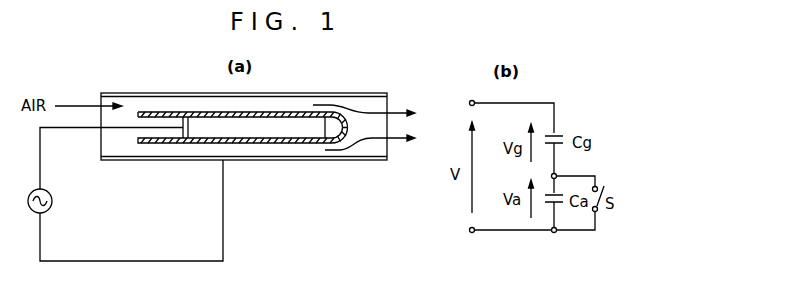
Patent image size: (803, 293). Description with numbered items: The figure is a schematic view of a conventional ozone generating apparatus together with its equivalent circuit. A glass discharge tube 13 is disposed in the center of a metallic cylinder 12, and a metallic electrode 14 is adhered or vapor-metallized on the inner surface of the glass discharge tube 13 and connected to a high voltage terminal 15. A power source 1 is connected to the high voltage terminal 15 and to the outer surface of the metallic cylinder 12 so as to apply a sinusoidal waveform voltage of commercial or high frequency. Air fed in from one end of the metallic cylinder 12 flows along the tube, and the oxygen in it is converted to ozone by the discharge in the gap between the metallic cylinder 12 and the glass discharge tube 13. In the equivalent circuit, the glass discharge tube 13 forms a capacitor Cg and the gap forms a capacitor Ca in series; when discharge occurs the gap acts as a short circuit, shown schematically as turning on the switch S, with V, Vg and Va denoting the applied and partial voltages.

The power source 1 is at (31, 209).
The metallic cylinder 12 is at (304, 93).
The glass discharge tube 13 is at (190, 112).
The metallic electrode 14 is at (283, 117).
The high voltage terminal 15 is at (192, 135).